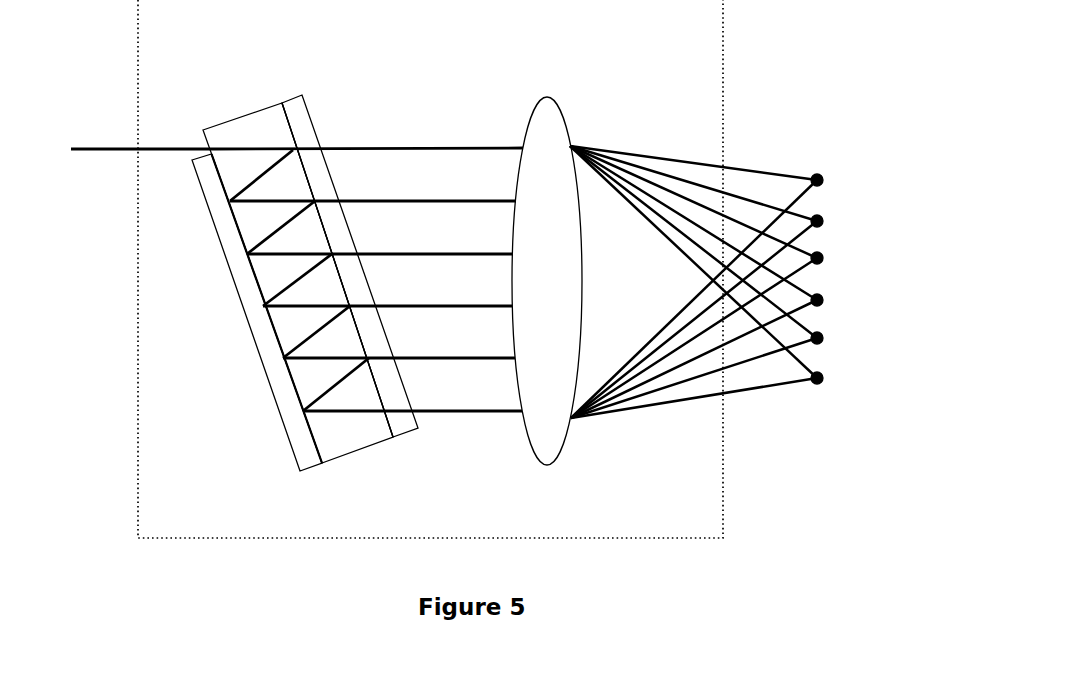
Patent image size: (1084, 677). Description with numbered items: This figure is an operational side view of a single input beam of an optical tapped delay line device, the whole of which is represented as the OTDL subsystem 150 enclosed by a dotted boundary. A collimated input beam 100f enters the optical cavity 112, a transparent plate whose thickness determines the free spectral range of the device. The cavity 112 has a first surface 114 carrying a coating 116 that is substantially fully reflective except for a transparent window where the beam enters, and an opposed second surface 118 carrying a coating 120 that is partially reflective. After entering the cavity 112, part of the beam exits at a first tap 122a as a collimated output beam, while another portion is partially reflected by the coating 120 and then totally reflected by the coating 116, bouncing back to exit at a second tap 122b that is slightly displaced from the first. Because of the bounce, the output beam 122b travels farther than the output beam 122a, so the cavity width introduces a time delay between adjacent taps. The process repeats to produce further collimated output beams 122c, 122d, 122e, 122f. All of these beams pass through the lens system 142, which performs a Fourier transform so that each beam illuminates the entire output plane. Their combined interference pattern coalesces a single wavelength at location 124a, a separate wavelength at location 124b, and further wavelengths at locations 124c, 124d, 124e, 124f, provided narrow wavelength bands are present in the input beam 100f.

The input beam 100f is at (142, 138).
The optical cavity 112 is at (298, 283).
The first surface 114 is at (321, 452).
The coating 116 is at (293, 442).
The second surface 118 is at (393, 427).
The coating 120 is at (413, 428).
The tap 122a is at (321, 148).
The tap 122b is at (337, 200).
The tap 122c is at (355, 253).
The tap 122d is at (374, 305).
The tap 122e is at (398, 357).
The tap 122f is at (421, 410).
The wavelength location 124a is at (821, 174).
The wavelength location 124b is at (821, 215).
The wavelength location 124c is at (821, 252).
The wavelength location 124d is at (821, 294).
The wavelength location 124e is at (821, 332).
The wavelength location 124f is at (821, 372).
The lens system 142 is at (547, 270).
The OTDL subsystem 150 is at (430, 282).